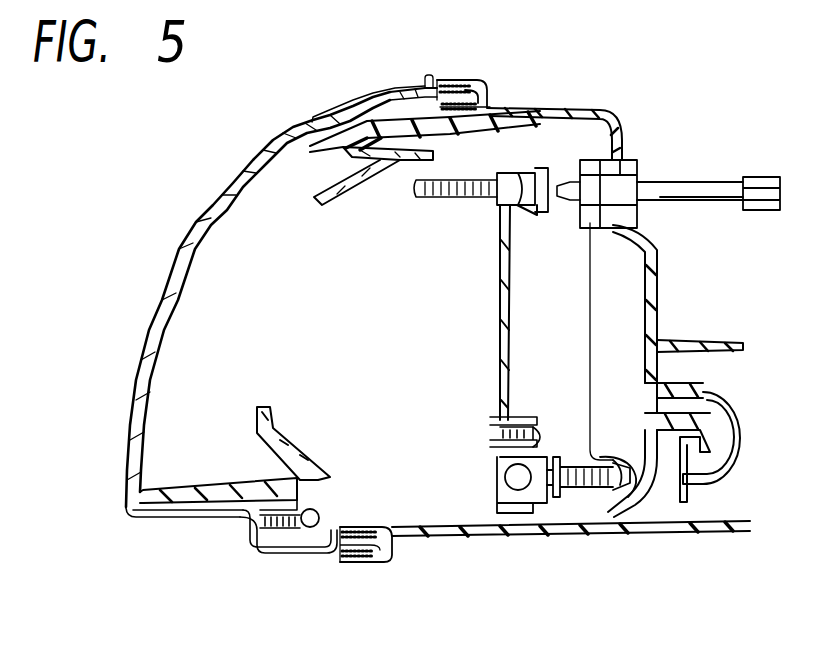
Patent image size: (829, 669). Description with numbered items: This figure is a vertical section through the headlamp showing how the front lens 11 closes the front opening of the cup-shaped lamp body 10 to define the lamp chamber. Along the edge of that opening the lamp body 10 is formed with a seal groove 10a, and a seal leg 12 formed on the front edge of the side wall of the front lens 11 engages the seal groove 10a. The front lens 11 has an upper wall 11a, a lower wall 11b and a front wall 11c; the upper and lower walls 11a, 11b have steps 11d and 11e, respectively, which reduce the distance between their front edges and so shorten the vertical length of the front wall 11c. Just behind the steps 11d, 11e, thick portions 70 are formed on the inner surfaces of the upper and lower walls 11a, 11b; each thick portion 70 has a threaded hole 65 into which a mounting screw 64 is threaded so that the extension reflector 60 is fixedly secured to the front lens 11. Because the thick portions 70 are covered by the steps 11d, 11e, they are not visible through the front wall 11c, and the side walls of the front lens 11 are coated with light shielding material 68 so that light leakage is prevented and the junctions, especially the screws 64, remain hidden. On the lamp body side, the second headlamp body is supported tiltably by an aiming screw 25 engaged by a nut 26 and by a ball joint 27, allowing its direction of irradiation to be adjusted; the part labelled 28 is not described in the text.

The lamp body 10 is at (603, 123).
The seal groove 10a is at (475, 80).
The front lens 11 is at (251, 299).
The upper wall 11a is at (357, 97).
The lower wall 11b is at (187, 523).
The front wall 11c is at (212, 205).
The step 11d is at (343, 107).
The step 11e is at (250, 543).
The seal leg 12 is at (455, 82).
The aiming screw 25 is at (687, 190).
The nut 26 is at (507, 180).
The ball joint 27 is at (500, 500).
The pivot screw 28 is at (543, 513).
The extension reflector 60 is at (230, 491).
The mounting screw 64 is at (313, 517).
The threaded hole 65 is at (280, 530).
The light shielding material 68 is at (150, 523).
The thick portion 70 is at (300, 483).